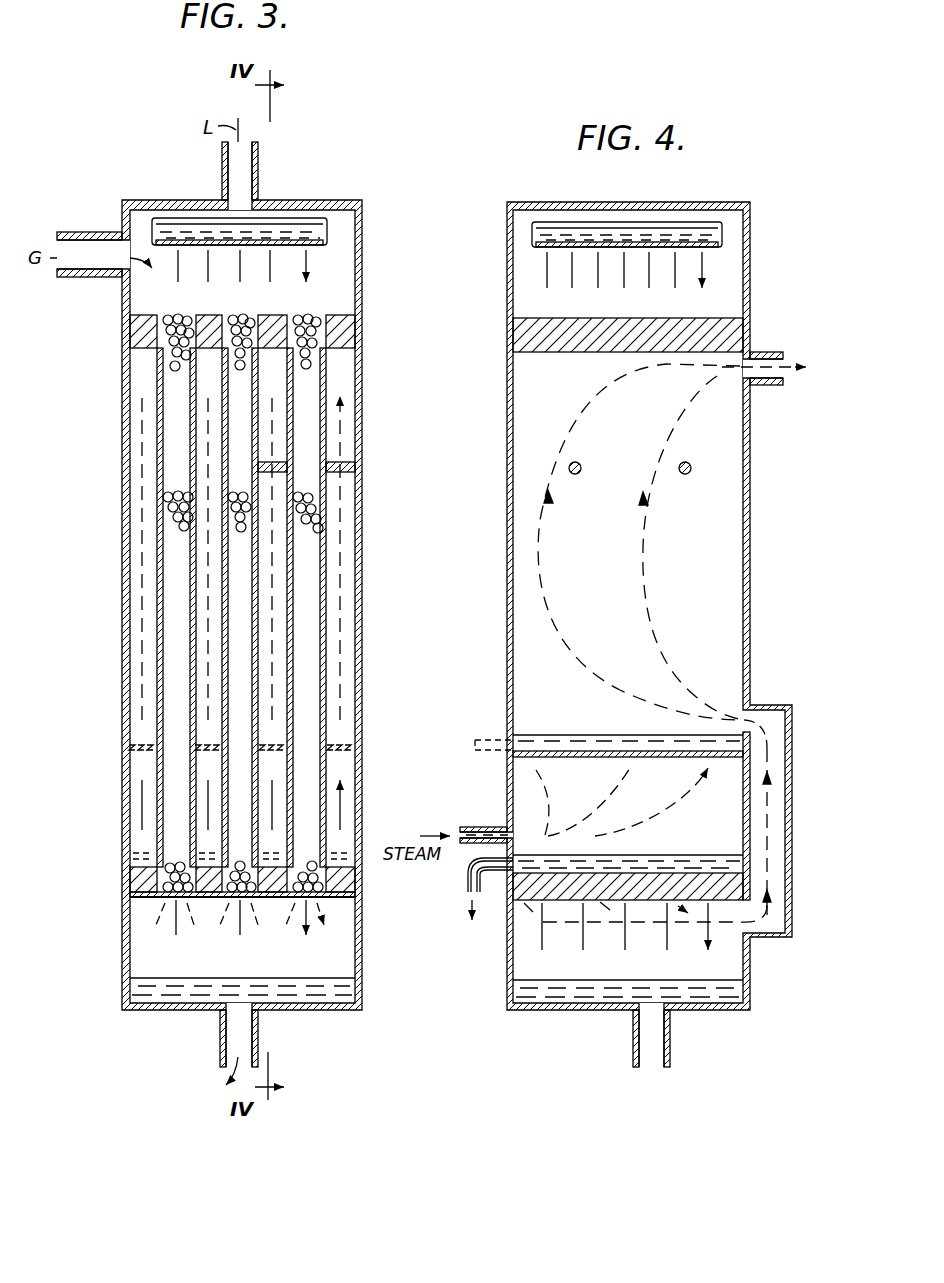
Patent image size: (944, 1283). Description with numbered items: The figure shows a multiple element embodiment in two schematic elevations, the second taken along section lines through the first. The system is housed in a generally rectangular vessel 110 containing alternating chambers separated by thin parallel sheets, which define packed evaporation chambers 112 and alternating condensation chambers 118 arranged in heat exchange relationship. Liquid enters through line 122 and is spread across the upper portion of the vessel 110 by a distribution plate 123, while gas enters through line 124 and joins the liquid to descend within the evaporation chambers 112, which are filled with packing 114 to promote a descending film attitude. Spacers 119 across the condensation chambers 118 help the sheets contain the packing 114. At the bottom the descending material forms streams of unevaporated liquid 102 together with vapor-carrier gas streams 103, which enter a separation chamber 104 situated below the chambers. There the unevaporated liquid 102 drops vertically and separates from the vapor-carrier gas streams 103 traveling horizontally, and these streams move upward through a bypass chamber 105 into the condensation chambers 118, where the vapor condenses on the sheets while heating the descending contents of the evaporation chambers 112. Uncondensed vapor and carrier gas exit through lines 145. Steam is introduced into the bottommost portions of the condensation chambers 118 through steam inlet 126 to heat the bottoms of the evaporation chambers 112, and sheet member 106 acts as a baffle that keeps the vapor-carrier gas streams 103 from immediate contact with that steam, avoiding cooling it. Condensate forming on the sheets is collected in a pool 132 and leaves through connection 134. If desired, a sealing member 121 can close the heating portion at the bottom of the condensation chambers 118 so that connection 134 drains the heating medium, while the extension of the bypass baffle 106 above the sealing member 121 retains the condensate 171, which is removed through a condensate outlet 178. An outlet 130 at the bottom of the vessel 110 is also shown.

In FIG. 3, the unevaporated liquid 102 is at (175, 923).
In FIG. 3, the vapor-carrier gas streams 103 is at (170, 903).
In FIG. 4, the vapor-carrier gas streams 103 is at (768, 868).
In FIG. 3, the separation chamber 104 is at (208, 947).
In FIG. 4, the separation chamber 104 is at (732, 970).
In FIG. 4, the bypass chamber 105 is at (800, 817).
In FIG. 4, the sheet member 106 is at (750, 775).
In FIG. 3, the vessel 110 is at (360, 290).
In FIG. 3, the evaporation chambers 112 is at (310, 573).
In FIG. 3, the packing 114 is at (176, 510).
In FIG. 3, the condensation chambers 118 is at (330, 647).
In FIG. 4, the condensation chambers 118 is at (641, 542).
In FIG. 3, the spacers 119 is at (328, 458).
In FIG. 4, the spacers 119 is at (683, 465).
In FIG. 3, the sealing member 121 is at (340, 745).
In FIG. 4, the sealing member 121 is at (580, 751).
In FIG. 3, the line 122 is at (222, 176).
In FIG. 3, the distribution plate 123 is at (330, 233).
In FIG. 4, the distribution plate 123 is at (722, 235).
In FIG. 3, the line 124 is at (82, 232).
In FIG. 4, the steam inlet 126 is at (477, 827).
In FIG. 3, the outlet pipe 130 is at (218, 1030).
In FIG. 4, the outlet pipe 130 is at (668, 1040).
In FIG. 4, the pool 132 is at (661, 862).
In FIG. 4, the connection 134 is at (465, 884).
In FIG. 4, the lines 145 is at (770, 352).
In FIG. 4, the condensate 171 is at (632, 735).
In FIG. 4, the condensate outlet 178 is at (485, 740).